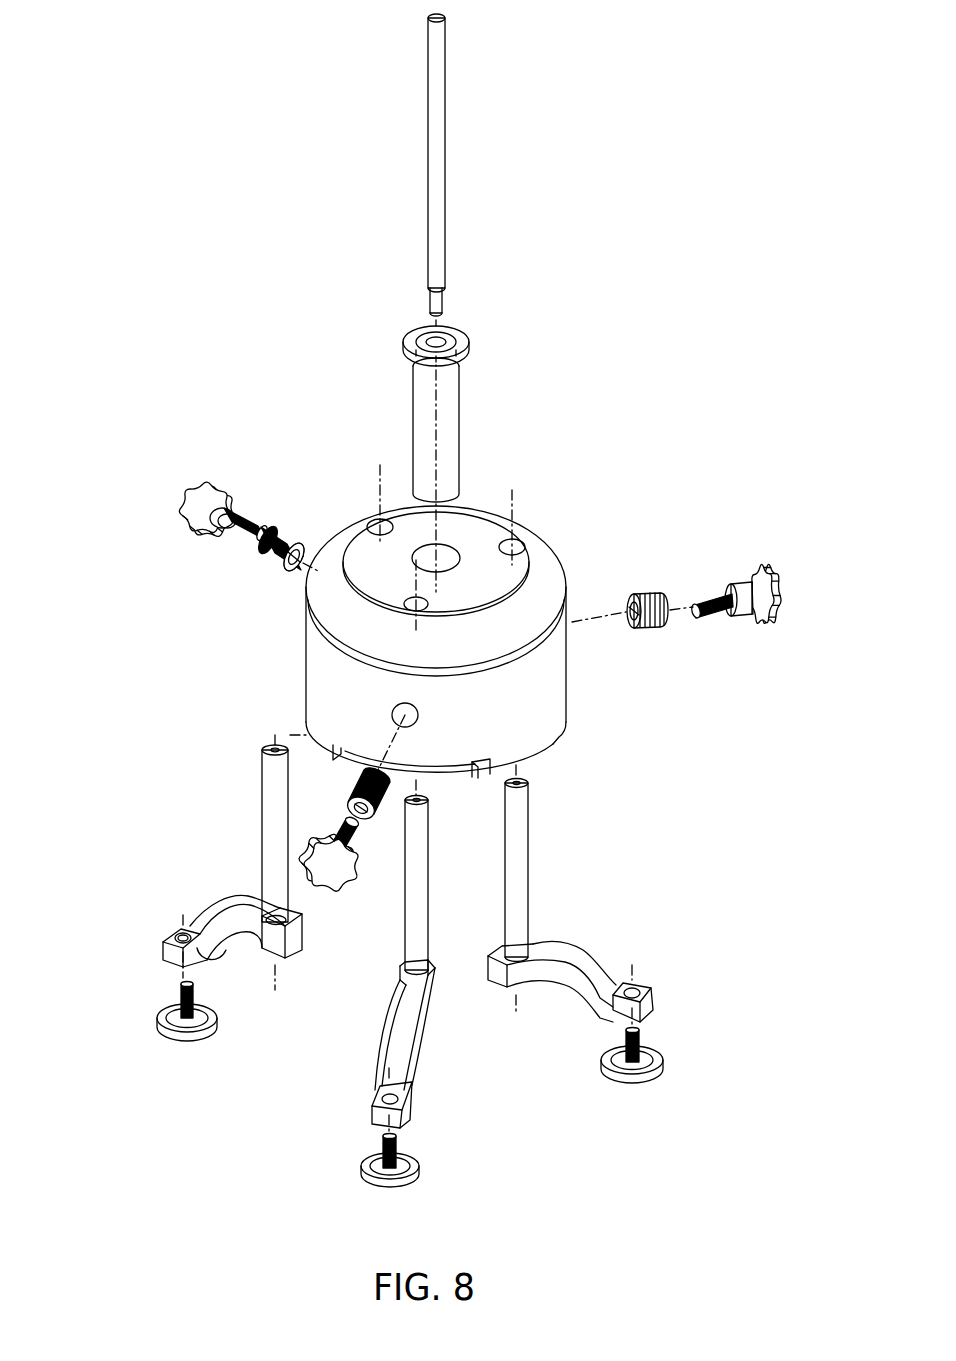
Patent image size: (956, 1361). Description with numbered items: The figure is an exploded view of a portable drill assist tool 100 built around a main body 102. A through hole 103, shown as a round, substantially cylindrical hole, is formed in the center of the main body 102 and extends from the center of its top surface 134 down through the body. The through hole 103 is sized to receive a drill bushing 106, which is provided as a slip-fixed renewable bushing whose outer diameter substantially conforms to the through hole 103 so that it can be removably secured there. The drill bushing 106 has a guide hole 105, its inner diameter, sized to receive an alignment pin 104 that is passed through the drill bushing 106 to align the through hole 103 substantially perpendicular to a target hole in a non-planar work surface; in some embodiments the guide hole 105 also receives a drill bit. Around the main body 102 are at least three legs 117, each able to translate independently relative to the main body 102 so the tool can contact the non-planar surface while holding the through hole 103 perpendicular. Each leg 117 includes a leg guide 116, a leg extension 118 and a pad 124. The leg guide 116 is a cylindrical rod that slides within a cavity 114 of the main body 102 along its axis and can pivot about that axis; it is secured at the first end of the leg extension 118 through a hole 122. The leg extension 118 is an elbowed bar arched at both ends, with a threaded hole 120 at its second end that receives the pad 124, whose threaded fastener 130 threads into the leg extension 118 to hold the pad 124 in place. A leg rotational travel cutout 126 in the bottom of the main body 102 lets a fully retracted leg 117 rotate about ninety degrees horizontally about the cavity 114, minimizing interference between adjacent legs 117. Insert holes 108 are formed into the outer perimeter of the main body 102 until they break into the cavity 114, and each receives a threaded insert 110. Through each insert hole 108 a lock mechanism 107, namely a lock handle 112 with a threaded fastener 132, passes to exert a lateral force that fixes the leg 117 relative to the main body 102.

The portable drill assist tool 100 is at (730, 112).
The main body 102 is at (543, 580).
The through hole 103 is at (430, 554).
The alignment pin 104 is at (434, 106).
The guide hole 105 is at (446, 344).
The drill bushing 106 is at (456, 412).
The lock mechanism 107 is at (104, 388).
The insert hole 108 is at (398, 714).
The threaded insert 110 is at (268, 570).
The lock handle 112 is at (190, 505).
The cavity 114 is at (376, 522).
The leg guide 116 is at (270, 805).
The leg 117 is at (104, 708).
The leg extension 118 is at (238, 906).
The threaded hole 120 is at (378, 1100).
The hole 122 is at (292, 930).
The pad 124 is at (172, 1012).
The leg rotational travel cutout 126 is at (483, 780).
The threaded fastener 130 is at (640, 1042).
The threaded fastener 132 is at (716, 606).
The top surface 134 is at (479, 527).